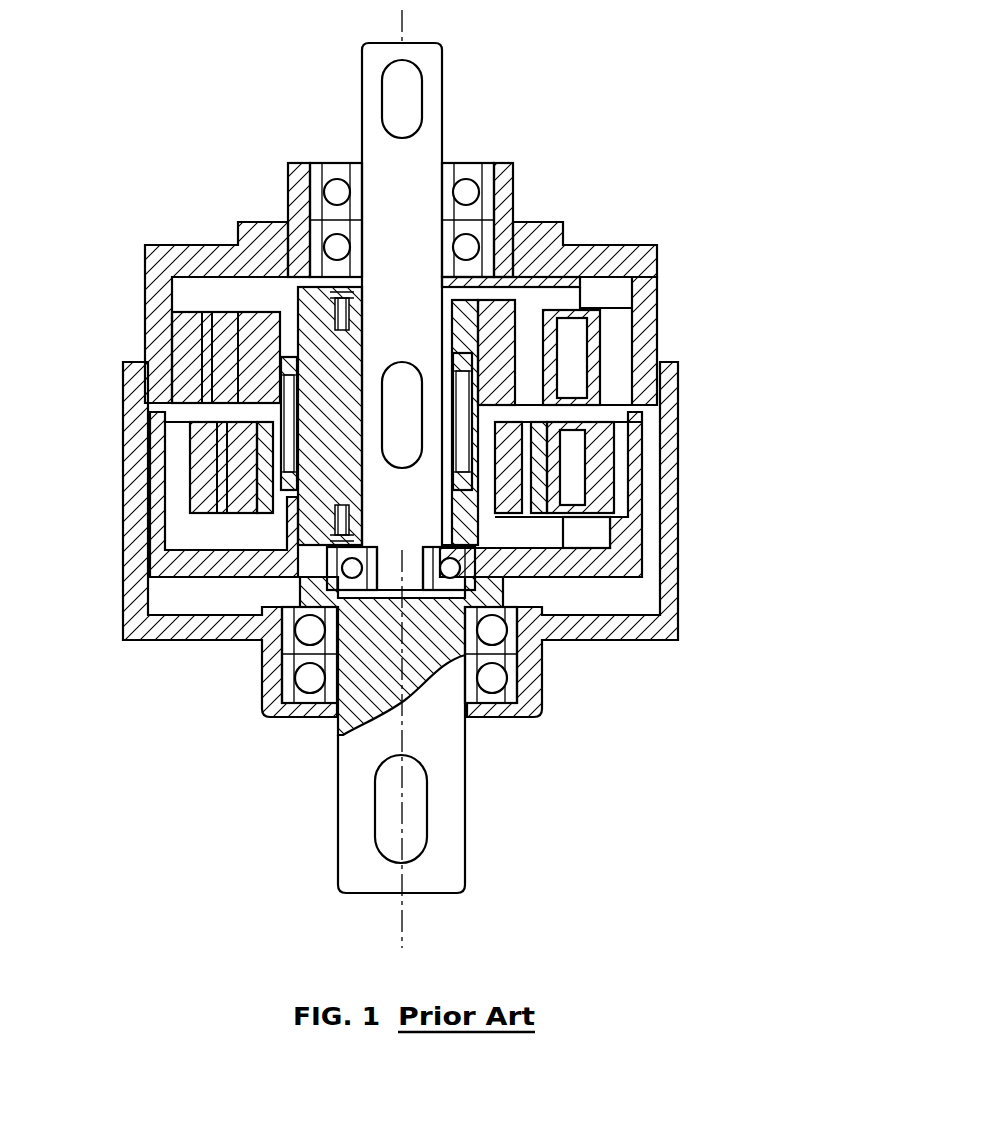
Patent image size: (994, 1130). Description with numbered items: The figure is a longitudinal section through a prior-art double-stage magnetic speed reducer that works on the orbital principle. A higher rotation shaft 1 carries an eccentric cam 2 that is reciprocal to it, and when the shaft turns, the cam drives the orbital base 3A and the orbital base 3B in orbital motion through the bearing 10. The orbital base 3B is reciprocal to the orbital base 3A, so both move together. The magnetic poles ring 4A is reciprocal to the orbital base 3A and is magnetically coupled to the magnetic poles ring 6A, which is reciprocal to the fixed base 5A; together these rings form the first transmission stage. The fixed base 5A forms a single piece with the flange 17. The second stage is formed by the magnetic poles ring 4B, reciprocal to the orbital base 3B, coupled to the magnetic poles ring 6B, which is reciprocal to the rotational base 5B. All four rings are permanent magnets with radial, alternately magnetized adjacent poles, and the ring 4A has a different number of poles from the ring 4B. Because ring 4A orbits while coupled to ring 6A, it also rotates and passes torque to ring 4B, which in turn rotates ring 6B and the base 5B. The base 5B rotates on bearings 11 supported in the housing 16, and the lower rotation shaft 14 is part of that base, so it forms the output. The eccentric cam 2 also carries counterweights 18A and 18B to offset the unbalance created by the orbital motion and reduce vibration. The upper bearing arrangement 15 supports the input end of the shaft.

The higher rotation shaft 1 is at (395, 90).
The eccentric cam 2 is at (333, 355).
The orbital base 3A is at (275, 353).
The orbital base 3B is at (290, 515).
The magnetic poles ring 4A is at (552, 338).
The magnetic poles ring 4B is at (540, 517).
The fixed base 5A is at (172, 287).
The rotational base 5B is at (197, 560).
The magnetic poles ring 6A is at (658, 363).
The magnetic poles ring 6B is at (630, 507).
The bearing 10 is at (315, 470).
The bearings 11 is at (335, 700).
The lower rotation shaft 14 is at (493, 838).
The upper bearing block 15 is at (493, 168).
The housing 16 is at (578, 655).
The flange 17 is at (622, 268).
The counterweight 18A is at (655, 280).
The counterweight 18B is at (593, 517).